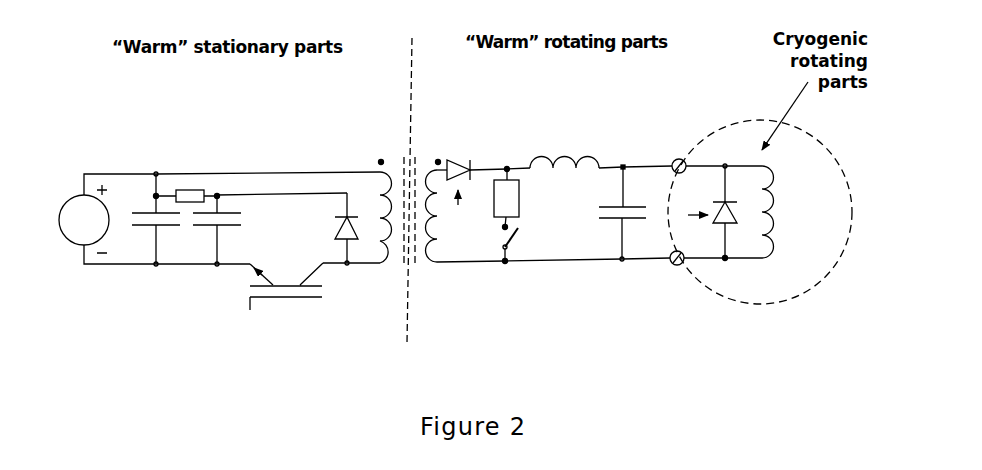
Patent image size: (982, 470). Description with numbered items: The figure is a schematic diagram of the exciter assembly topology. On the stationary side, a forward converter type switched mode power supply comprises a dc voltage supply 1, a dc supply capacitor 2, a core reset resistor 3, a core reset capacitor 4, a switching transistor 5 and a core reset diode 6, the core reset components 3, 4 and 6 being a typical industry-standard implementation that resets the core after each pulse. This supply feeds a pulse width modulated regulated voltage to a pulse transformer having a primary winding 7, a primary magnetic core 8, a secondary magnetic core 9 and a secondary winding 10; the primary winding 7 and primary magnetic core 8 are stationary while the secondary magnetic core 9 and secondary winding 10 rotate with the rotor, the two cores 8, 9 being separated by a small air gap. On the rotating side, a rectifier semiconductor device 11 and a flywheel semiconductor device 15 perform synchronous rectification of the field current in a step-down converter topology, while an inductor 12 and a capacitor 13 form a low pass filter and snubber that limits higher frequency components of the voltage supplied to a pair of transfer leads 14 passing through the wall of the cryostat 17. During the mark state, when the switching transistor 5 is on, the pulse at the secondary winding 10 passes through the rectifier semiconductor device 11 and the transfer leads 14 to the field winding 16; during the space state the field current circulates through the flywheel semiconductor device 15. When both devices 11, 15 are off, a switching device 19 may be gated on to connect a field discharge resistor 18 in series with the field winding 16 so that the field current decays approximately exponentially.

The dc voltage supply 1 is at (63, 200).
The dc supply capacitor 2 is at (140, 202).
The core reset resistor 3 is at (192, 187).
The core reset capacitor 4 is at (242, 212).
The switching transistor 5 is at (247, 282).
The core reset diode 6 is at (355, 245).
The primary winding 7 is at (377, 188).
The primary magnetic core 8 is at (398, 274).
The secondary magnetic core 9 is at (416, 274).
The secondary winding 10 is at (428, 162).
The rectifier semiconductor device 11 is at (462, 158).
The inductor 12 is at (547, 158).
The capacitor 13 is at (610, 222).
The transfer leads 14 is at (670, 252).
The flywheel semiconductor device 15 is at (710, 197).
The field winding 16 is at (778, 178).
The cryostat 17 is at (695, 282).
The field discharge resistor 18 is at (522, 203).
The switching device 19 is at (518, 245).